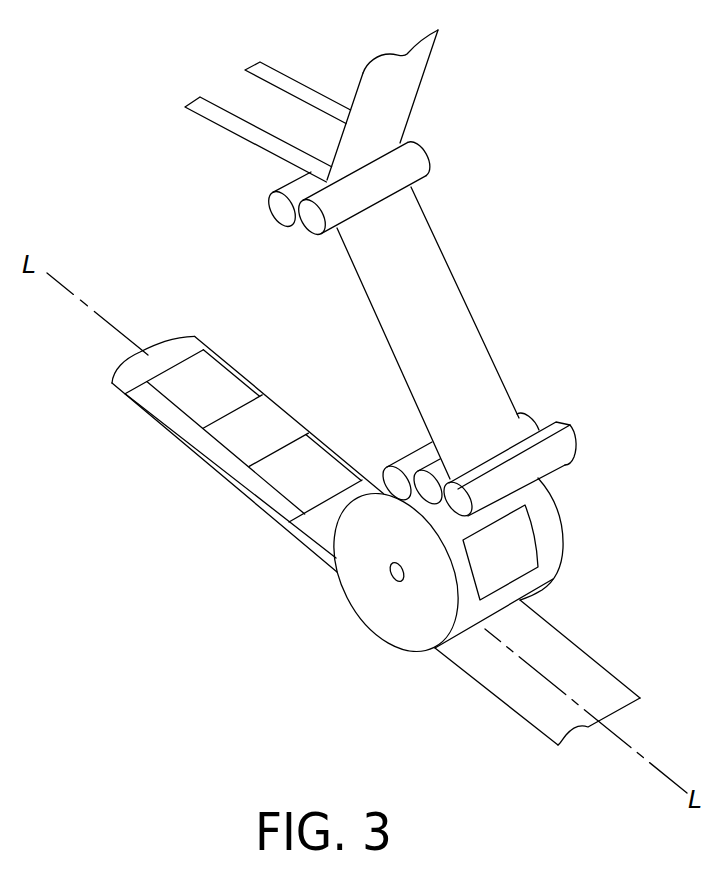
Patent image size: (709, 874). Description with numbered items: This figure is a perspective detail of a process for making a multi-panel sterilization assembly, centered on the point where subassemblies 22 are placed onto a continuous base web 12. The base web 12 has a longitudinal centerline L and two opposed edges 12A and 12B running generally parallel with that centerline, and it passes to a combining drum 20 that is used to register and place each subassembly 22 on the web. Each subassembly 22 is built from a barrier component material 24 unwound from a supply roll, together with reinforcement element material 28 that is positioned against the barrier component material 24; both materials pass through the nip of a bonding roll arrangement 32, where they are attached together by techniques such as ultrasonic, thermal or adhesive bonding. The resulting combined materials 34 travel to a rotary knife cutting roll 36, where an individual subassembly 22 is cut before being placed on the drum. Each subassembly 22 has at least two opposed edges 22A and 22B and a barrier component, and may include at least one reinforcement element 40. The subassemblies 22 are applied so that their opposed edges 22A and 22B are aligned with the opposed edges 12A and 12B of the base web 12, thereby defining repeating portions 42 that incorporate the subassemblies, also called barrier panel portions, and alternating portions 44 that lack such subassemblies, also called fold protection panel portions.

The continuous base web 12 is at (568, 703).
The opposed edge of base web 12A is at (513, 713).
The opposed edge of base web 12B is at (600, 658).
The combining drum 20 is at (469, 603).
The subassembly 22 is at (523, 559).
The opposed edge of subassembly 22A is at (457, 570).
The opposed edge of subassembly 22B is at (543, 537).
The barrier component material 24 is at (426, 70).
The reinforcement element material 28 is at (292, 79).
The bonding roll arrangement 32 is at (444, 158).
The combined materials 34 is at (460, 308).
The rotary knife cutting roll 36 is at (558, 416).
The reinforcement element 40 is at (217, 374).
The repeating portions (barrier panel portions) 42 is at (140, 413).
The alternating portions (fold protection panel portions) 44 is at (282, 412).